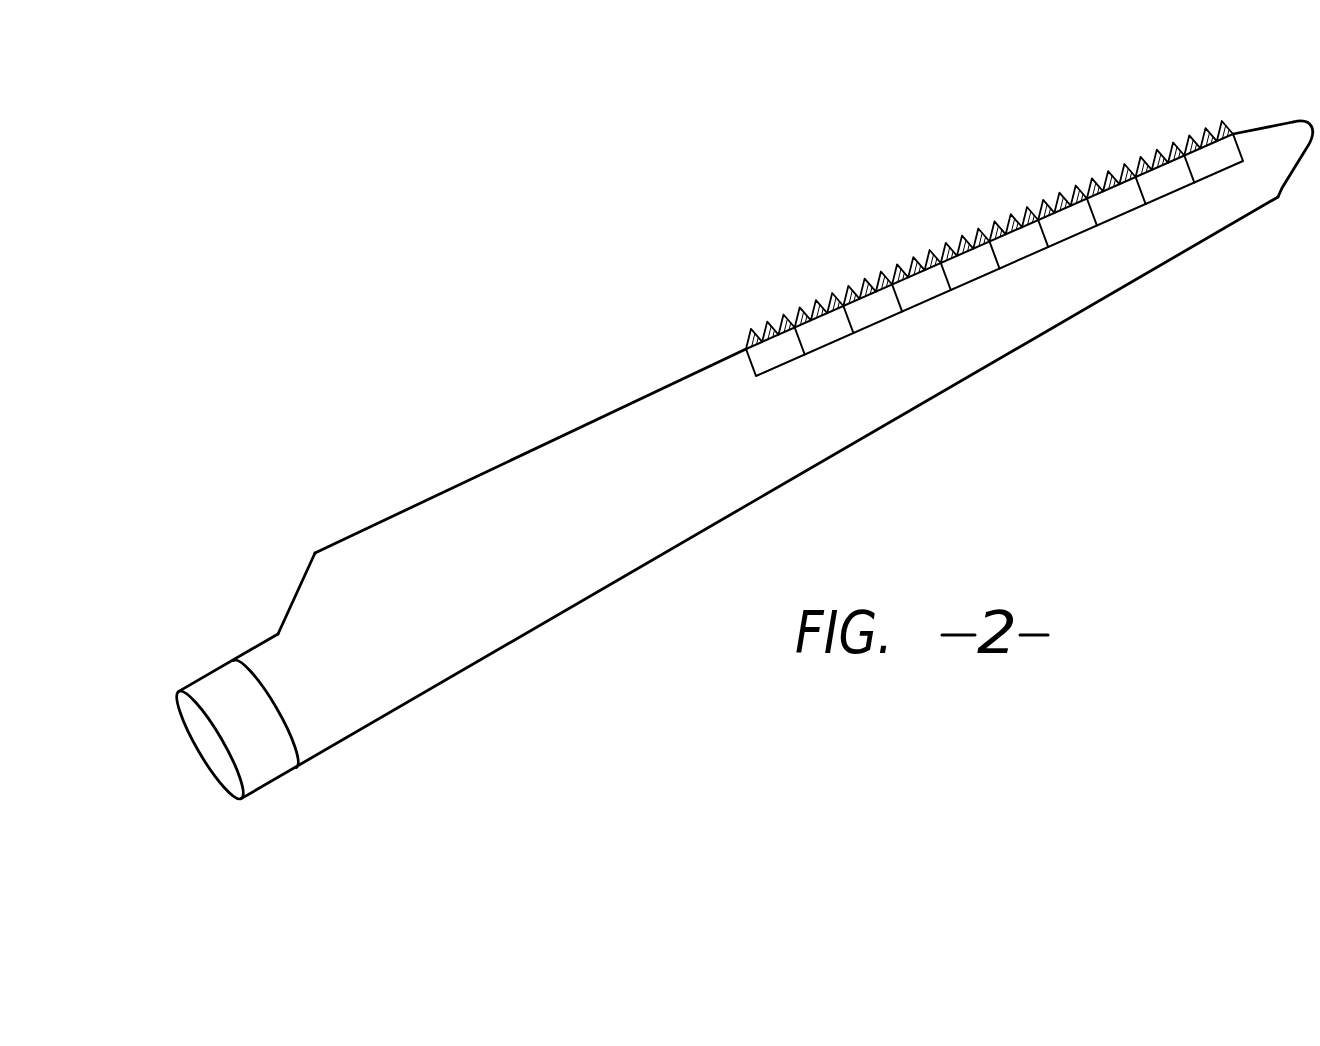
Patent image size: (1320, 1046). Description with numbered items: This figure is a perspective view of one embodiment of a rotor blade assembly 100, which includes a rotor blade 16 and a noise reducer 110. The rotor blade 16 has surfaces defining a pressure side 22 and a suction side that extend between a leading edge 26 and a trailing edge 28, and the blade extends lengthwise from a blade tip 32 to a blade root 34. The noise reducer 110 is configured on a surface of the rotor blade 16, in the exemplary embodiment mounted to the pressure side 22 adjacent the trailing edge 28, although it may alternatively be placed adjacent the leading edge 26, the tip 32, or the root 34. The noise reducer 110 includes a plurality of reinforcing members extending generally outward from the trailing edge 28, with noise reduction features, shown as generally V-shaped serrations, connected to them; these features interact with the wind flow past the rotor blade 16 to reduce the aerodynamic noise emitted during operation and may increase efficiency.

The rotor blade assembly 100 is at (739, 467).
The rotor blade 16 is at (515, 443).
The pressure side 22 is at (425, 535).
The leading edge 26 is at (460, 675).
The trailing edge 28 is at (337, 537).
The blade tip 32 is at (1282, 136).
The blade root 34 is at (254, 739).
The noise reducer 110 is at (957, 226).